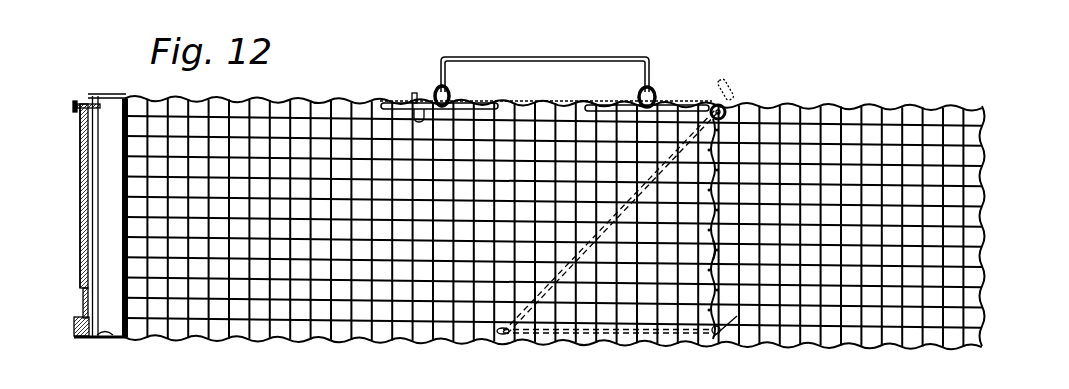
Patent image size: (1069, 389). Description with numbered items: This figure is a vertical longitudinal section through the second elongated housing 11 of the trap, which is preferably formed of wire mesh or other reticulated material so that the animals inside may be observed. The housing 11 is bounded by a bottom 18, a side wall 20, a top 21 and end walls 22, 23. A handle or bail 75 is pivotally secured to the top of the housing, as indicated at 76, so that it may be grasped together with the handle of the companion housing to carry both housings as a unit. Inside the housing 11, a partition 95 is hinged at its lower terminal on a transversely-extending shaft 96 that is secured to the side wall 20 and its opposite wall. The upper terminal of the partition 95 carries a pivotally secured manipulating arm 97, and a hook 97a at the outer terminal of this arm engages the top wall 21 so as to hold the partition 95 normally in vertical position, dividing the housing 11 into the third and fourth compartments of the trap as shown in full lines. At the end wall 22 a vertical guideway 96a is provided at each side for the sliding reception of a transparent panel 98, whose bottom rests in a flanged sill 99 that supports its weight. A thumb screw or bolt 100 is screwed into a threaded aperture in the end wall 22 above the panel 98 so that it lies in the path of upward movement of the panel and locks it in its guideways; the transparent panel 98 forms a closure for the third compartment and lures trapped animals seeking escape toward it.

The thumb screw 100 is at (79, 100).
The vertical guideway 96a is at (80, 168).
The transparent panel 98 is at (80, 190).
The end wall 22 is at (82, 298).
The flanged sill 99 is at (75, 322).
The handle 75 is at (560, 58).
The pivotal securement 76 is at (398, 99).
The hook 97a is at (447, 100).
The manipulating arm 97 is at (544, 100).
The top 21 is at (812, 104).
The side wall 20 is at (967, 229).
The end wall 23 is at (985, 300).
The partition 95 is at (718, 260).
The bottom 18 is at (640, 338).
The transverse shaft 96 is at (703, 344).
The housing 11 is at (815, 342).